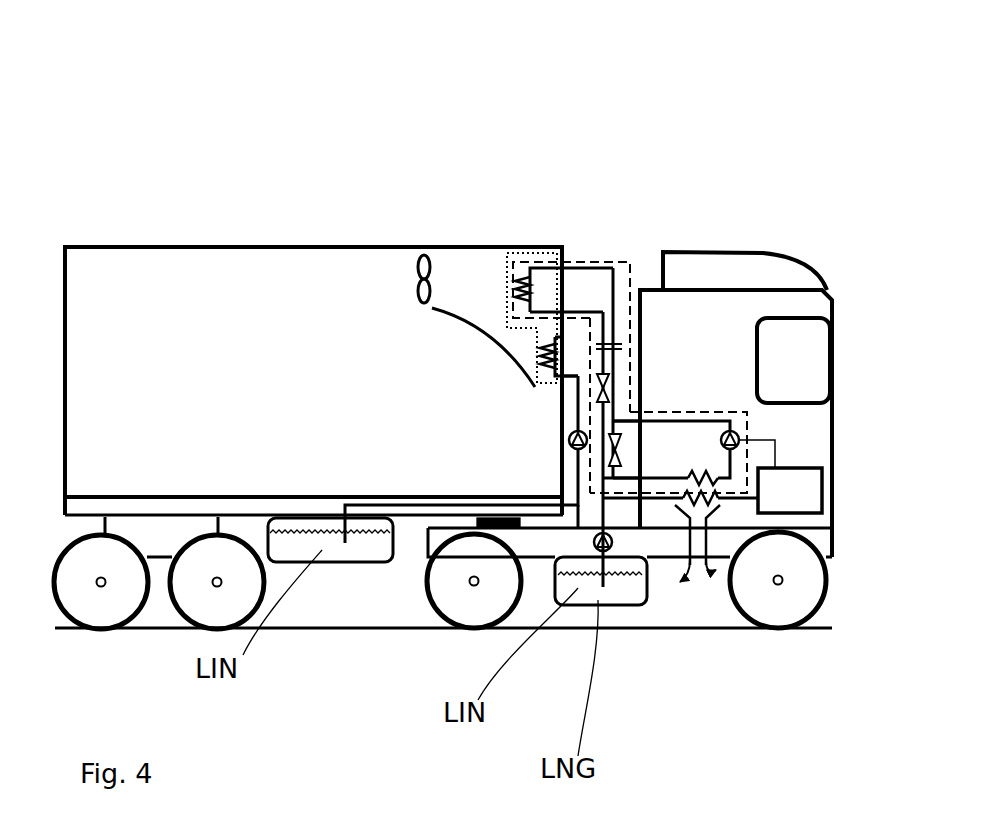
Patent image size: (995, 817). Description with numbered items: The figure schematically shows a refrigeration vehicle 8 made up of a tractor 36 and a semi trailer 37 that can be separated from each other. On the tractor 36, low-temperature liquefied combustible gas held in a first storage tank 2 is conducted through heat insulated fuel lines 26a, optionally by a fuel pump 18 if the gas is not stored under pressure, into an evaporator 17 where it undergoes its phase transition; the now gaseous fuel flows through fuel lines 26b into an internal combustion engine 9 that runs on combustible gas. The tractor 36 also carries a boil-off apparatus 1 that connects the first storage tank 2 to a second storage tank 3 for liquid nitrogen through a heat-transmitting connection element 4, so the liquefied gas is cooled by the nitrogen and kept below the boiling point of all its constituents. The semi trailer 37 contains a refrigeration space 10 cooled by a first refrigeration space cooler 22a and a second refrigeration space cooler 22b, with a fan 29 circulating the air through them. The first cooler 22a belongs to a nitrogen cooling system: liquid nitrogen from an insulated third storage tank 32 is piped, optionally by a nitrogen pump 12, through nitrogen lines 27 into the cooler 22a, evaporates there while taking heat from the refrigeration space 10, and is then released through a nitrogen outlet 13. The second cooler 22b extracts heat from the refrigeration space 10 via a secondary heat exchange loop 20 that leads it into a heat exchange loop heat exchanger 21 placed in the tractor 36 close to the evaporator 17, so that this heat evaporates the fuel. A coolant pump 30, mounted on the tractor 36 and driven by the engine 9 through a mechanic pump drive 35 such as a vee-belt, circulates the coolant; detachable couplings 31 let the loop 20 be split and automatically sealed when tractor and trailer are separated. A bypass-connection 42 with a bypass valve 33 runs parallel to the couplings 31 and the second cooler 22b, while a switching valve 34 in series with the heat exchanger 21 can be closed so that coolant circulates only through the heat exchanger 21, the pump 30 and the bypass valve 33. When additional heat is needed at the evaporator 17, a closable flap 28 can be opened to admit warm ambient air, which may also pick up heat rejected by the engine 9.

The boil-off apparatus 1 is at (608, 612).
The first storage tank 2 is at (600, 600).
The second storage tank 3 is at (578, 340).
The heat-transmitting connection element 4 is at (585, 598).
The refrigeration vehicle 8 is at (156, 93).
The internal combustion engine 9 is at (758, 515).
The refrigeration space 10 is at (190, 247).
The nitrogen pump 12 is at (560, 412).
The nitrogen outlet 13 is at (612, 347).
The evaporator 17 is at (697, 505).
The fuel pump 18 is at (596, 535).
The secondary heat exchange loop 20 is at (590, 262).
The heat exchange loop heat exchanger 21 is at (713, 477).
The first refrigeration space cooler 22a is at (513, 273).
The second refrigeration space cooler 22b is at (547, 345).
The fuel lines 26a is at (692, 560).
The fuel lines 26b is at (716, 572).
The nitrogen lines 27 is at (570, 446).
The closable flap 28 is at (662, 498).
The fan 29 is at (418, 272).
The coolant pump 30 is at (738, 432).
The detachable couplings 31 is at (610, 383).
The third storage tank 32 is at (312, 562).
The bypass valve 33 is at (626, 472).
The switching valve 34 is at (620, 447).
The mechanic pump drive 35 is at (748, 500).
The tractor 36 is at (826, 123).
The semi trailer 37 is at (320, 234).
The bypass-connection 42 is at (645, 455).